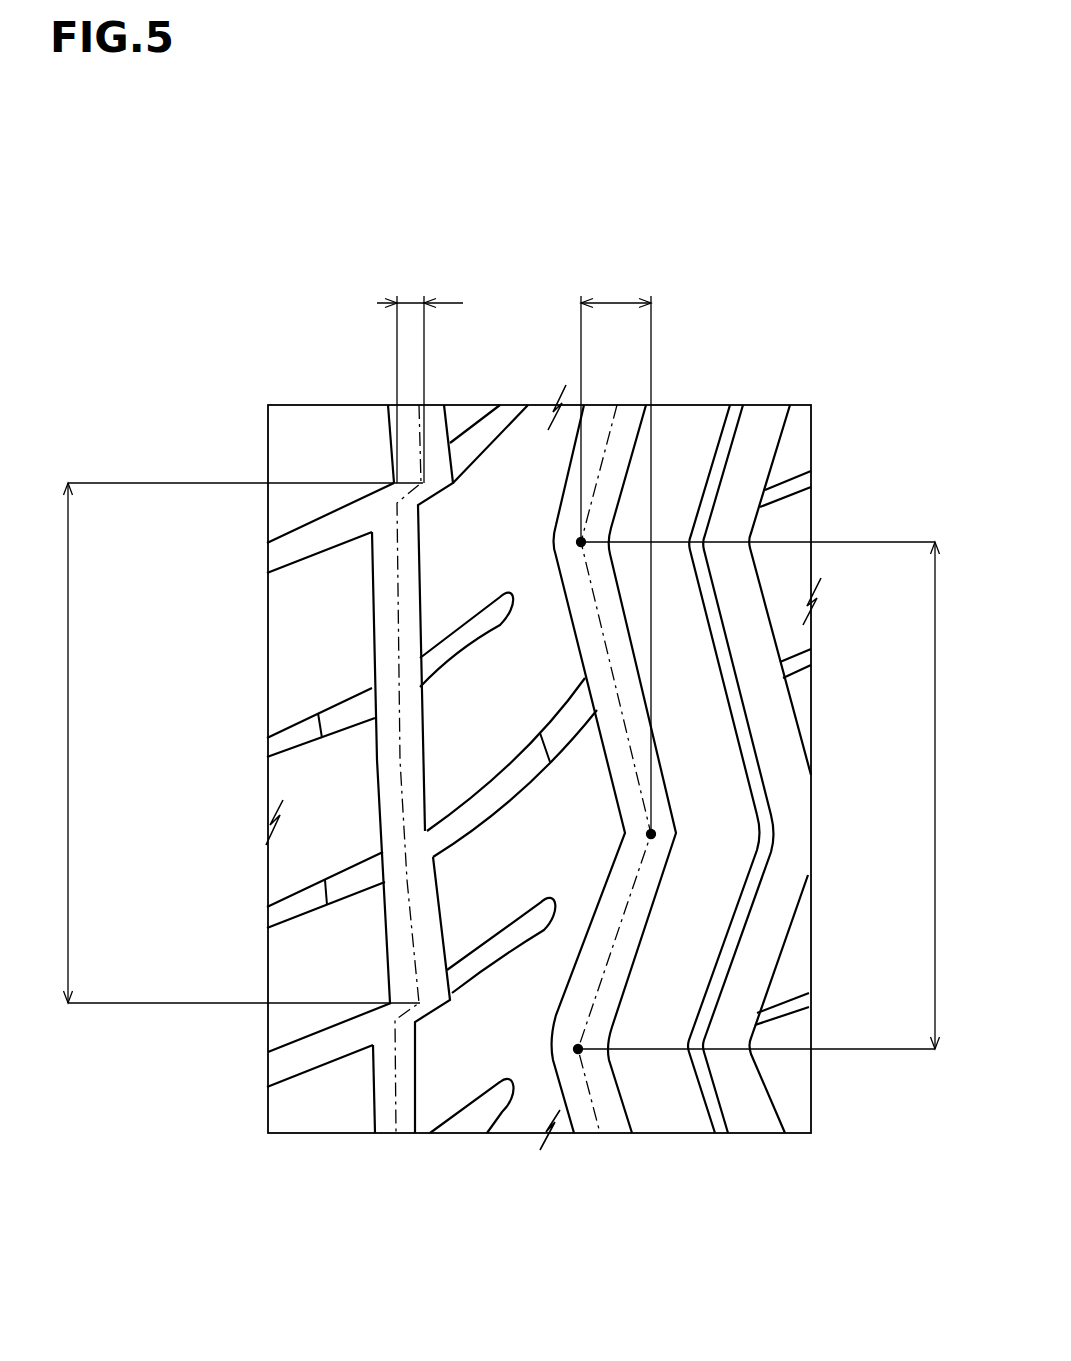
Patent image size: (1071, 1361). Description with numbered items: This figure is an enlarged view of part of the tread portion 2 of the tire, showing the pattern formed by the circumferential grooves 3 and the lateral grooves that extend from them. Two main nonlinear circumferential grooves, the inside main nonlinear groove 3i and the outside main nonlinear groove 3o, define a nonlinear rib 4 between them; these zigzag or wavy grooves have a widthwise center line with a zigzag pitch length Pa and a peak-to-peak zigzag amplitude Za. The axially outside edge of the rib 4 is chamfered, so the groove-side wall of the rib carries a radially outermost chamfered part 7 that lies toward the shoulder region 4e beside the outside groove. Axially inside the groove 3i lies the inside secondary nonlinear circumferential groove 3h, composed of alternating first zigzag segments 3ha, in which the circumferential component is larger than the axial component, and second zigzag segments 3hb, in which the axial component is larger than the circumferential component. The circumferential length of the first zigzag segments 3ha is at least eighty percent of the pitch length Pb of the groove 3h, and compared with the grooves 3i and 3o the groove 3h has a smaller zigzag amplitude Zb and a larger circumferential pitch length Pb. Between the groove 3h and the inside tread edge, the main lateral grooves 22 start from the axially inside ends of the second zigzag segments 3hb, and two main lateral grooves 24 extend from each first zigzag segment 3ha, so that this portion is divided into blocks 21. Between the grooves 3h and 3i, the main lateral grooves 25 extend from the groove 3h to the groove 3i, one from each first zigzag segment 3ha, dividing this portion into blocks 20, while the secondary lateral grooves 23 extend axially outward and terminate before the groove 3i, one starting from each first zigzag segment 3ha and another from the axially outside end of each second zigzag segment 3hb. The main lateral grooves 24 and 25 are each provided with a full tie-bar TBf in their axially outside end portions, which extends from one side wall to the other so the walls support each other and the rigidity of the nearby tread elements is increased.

The tread portion 2 is at (314, 430).
The circumferential grooves 3 is at (518, 856).
The inside secondary nonlinear circumferential groove 3h is at (380, 1088).
The inside main nonlinear groove 3i is at (578, 1100).
The outside main nonlinear groove 3o is at (735, 1085).
The first zigzag segments 3ha is at (489, 828).
The second zigzag segments 3hb is at (402, 1010).
The rib 4 is at (685, 437).
The shoulder land portion 4e is at (717, 460).
The chamfered part 7 is at (727, 432).
The blocks 20 is at (508, 545).
The blocks 21 is at (337, 650).
The main lateral grooves 22 is at (316, 539).
The secondary lateral grooves 23 is at (452, 658).
The main lateral grooves 24 is at (291, 721).
The main lateral grooves 25 is at (402, 927).
The full tie-bar TBf is at (348, 710).
The zigzag pitch lengths Pa is at (764, 795).
The circumferential pitch length Pb is at (236, 743).
The zigzag amplitude Za is at (616, 554).
The zigzag amplitude Zb is at (420, 377).